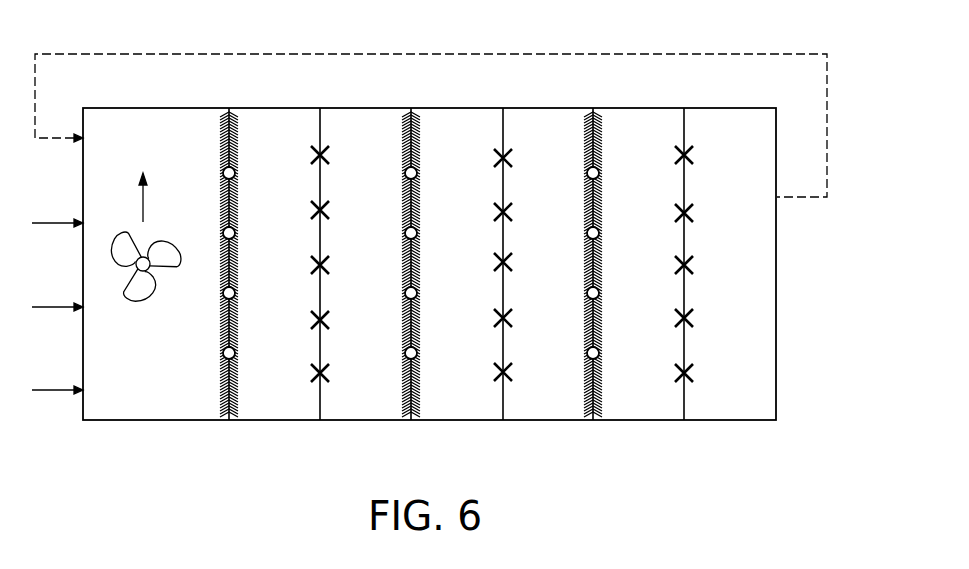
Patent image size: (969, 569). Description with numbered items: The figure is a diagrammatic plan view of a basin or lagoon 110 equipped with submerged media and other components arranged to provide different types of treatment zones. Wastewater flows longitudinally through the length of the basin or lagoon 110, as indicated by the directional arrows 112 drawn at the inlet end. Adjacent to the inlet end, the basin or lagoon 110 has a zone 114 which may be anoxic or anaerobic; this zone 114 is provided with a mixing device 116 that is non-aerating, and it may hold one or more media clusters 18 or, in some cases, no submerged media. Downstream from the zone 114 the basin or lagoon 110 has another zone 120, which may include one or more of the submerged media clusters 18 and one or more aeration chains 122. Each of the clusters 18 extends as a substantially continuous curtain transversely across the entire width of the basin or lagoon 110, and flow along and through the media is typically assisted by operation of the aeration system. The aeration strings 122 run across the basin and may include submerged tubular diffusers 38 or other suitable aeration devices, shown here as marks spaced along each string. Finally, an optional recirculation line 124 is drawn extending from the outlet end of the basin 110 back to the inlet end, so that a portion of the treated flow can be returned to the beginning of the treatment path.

The basin or lagoon 110 is at (777, 365).
The directional arrows 112 is at (48, 140).
The zone 114 is at (168, 405).
The mixing device 116 is at (137, 300).
The zone 120 is at (453, 403).
The aeration chains 122 is at (321, 305).
The recirculation line 124 is at (676, 54).
The clusters 18 is at (220, 160).
The submerged tubular diffusers 38 is at (323, 209).